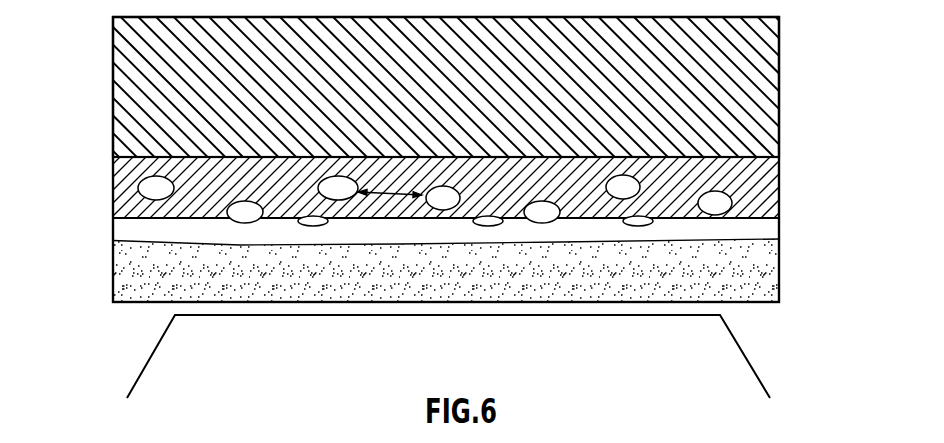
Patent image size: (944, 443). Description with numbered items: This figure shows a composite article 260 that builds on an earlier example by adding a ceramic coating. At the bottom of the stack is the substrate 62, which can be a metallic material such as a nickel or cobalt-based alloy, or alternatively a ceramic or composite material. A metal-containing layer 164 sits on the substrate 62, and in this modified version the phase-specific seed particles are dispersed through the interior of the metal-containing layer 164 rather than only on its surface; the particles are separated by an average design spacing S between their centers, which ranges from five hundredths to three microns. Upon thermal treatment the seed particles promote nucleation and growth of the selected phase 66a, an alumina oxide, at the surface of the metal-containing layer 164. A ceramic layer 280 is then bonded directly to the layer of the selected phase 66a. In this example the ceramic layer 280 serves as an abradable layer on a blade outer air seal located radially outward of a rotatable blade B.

The substrate 62 is at (780, 85).
The metal-containing layer 164 is at (779, 185).
The selected phase 66a is at (762, 229).
The ceramic layer 280 is at (780, 267).
The composite article 260 is at (94, 194).
The average design spacing S is at (393, 193).
The rotatable blade B is at (750, 360).